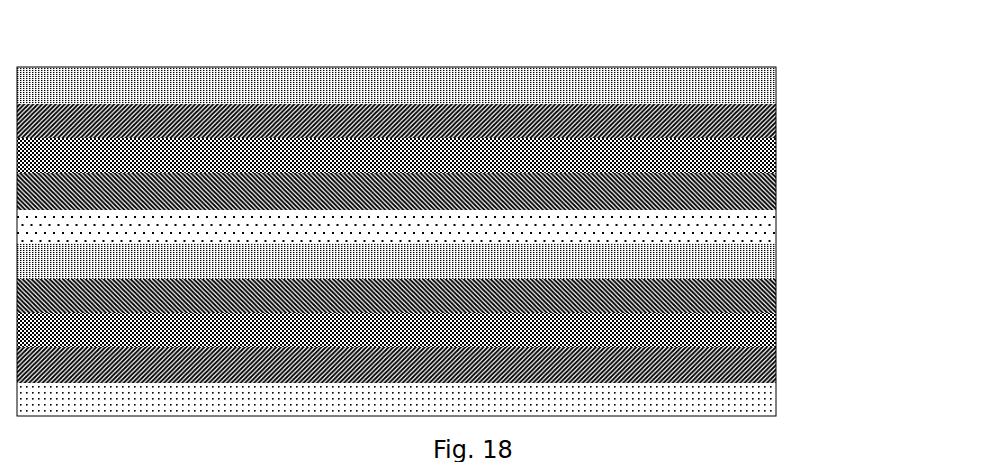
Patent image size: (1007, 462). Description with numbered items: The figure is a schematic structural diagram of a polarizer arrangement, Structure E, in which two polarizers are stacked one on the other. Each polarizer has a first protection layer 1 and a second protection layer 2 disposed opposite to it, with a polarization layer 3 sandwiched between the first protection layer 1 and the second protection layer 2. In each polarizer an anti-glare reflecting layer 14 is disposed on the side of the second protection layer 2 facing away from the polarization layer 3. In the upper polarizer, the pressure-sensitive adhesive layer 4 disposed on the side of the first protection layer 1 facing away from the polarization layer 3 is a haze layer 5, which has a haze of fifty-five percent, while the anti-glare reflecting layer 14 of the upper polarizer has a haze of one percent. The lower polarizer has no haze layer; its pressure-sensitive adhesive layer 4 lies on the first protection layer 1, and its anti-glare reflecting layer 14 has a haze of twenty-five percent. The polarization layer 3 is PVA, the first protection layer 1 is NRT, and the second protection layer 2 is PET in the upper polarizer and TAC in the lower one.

The anti-glare reflecting layer 14 is at (768, 76).
The second protection layer 2 is at (768, 113).
The polarization layer 3 is at (768, 149).
The first protection layer 1 is at (768, 184).
The haze layer 5 is at (743, 212).
The pressure-sensitive adhesive layer 4 is at (768, 391).